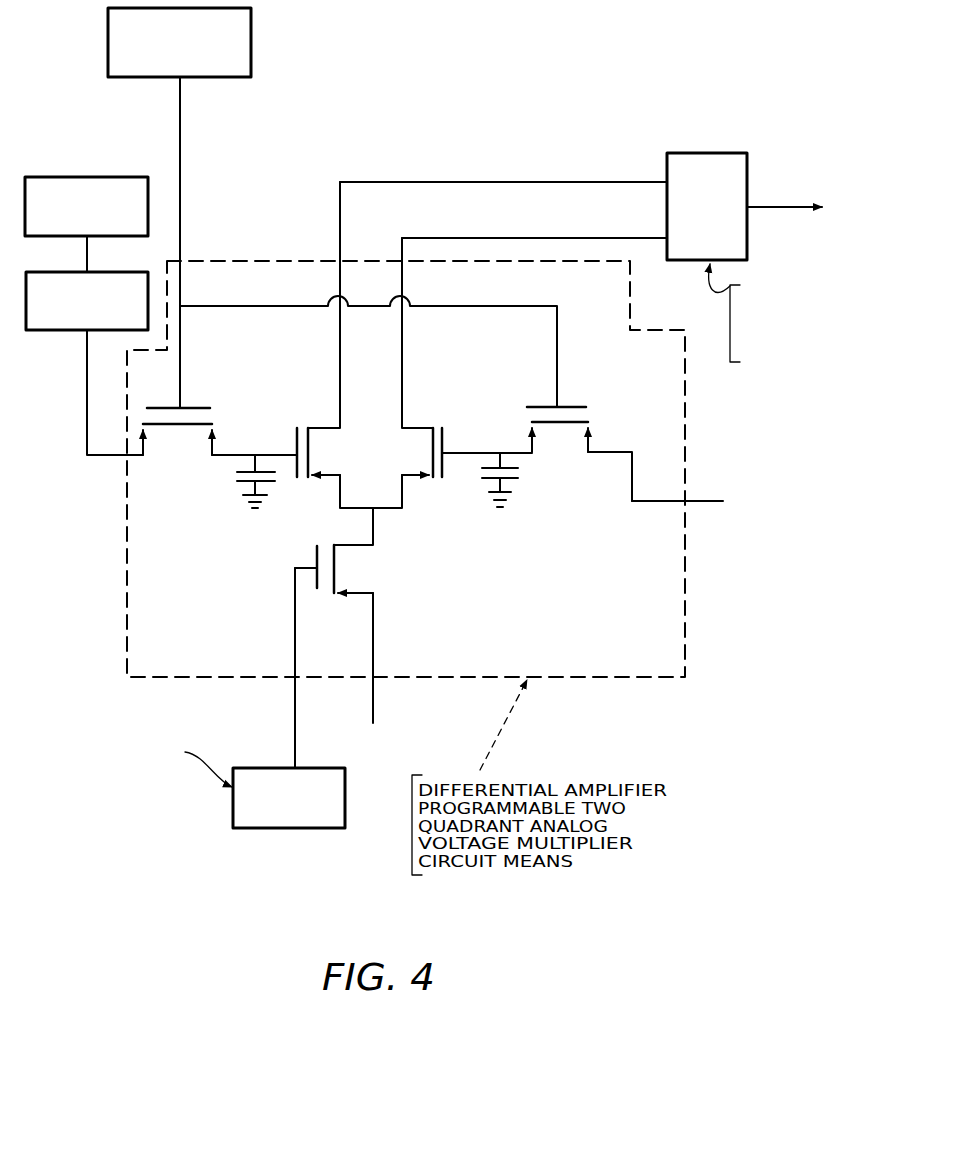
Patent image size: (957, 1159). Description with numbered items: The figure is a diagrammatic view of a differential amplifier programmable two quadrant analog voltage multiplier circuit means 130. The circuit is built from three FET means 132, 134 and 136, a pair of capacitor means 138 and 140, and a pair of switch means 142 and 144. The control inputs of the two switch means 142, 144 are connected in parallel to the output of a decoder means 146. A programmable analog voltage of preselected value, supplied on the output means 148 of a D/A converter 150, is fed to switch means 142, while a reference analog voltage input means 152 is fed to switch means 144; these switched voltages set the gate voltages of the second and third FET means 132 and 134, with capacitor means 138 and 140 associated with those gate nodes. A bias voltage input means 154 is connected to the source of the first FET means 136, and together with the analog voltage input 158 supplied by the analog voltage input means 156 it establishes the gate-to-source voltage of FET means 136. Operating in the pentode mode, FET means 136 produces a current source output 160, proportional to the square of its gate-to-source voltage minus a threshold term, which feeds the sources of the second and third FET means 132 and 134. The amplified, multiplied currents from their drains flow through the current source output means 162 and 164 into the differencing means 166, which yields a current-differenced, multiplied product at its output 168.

The differential amplifier programmable two quadrant analog voltage multiplier circu 130 is at (128, 590).
The second FET means 132 is at (308, 425).
The third FET means 134 is at (418, 425).
The first FET means 136 is at (330, 590).
The capacitor means 138 is at (228, 468).
The capacitor means 140 is at (500, 468).
The switch means 142 is at (213, 407).
The switch means 144 is at (595, 413).
The decoder means 146 is at (253, 38).
The output means of D/A converter 148 is at (87, 416).
The D/A converter 150 is at (62, 331).
The reference analog voltage input means 152 is at (645, 502).
The bias voltage input means 154 is at (373, 638).
The analog voltage input means 156 is at (196, 777).
The analog voltage input 158 is at (295, 736).
The current source output 160 is at (375, 531).
The current source output means 162 is at (495, 182).
The current source output means 164 is at (500, 238).
The differencing means 166 is at (767, 257).
The output 168 is at (780, 205).